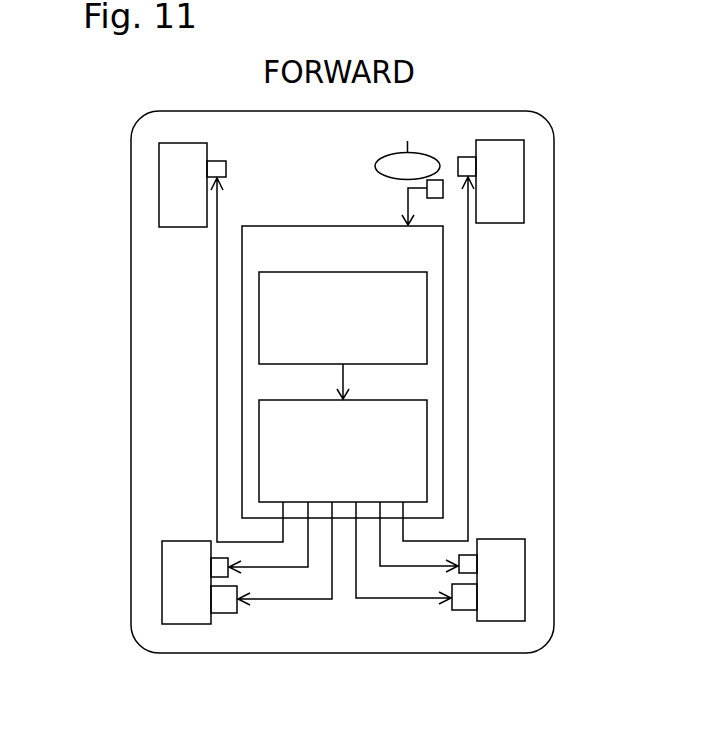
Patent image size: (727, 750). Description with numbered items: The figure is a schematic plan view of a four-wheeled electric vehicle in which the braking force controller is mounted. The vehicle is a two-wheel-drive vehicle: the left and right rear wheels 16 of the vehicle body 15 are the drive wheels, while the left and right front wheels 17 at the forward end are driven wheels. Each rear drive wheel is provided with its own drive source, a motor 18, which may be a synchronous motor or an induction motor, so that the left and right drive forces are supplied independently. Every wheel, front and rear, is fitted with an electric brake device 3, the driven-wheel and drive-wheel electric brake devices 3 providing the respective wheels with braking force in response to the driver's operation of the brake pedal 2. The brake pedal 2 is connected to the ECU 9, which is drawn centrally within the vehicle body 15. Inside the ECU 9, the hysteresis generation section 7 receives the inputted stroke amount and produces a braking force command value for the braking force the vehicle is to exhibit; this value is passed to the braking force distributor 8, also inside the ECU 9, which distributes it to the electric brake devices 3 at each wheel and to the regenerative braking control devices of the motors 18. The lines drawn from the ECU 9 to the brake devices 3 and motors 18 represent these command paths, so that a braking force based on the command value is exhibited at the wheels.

The brake pedal 2 is at (443, 179).
The electric brake device 3 is at (209, 160).
The hysteresis generation section 7 is at (427, 326).
The braking force distributor 8 is at (427, 453).
The ECU 9 is at (292, 237).
The vehicle body 15 is at (535, 375).
The rear wheel 16 is at (160, 582).
The front wheel 17 is at (160, 184).
The motor 18 is at (225, 613).